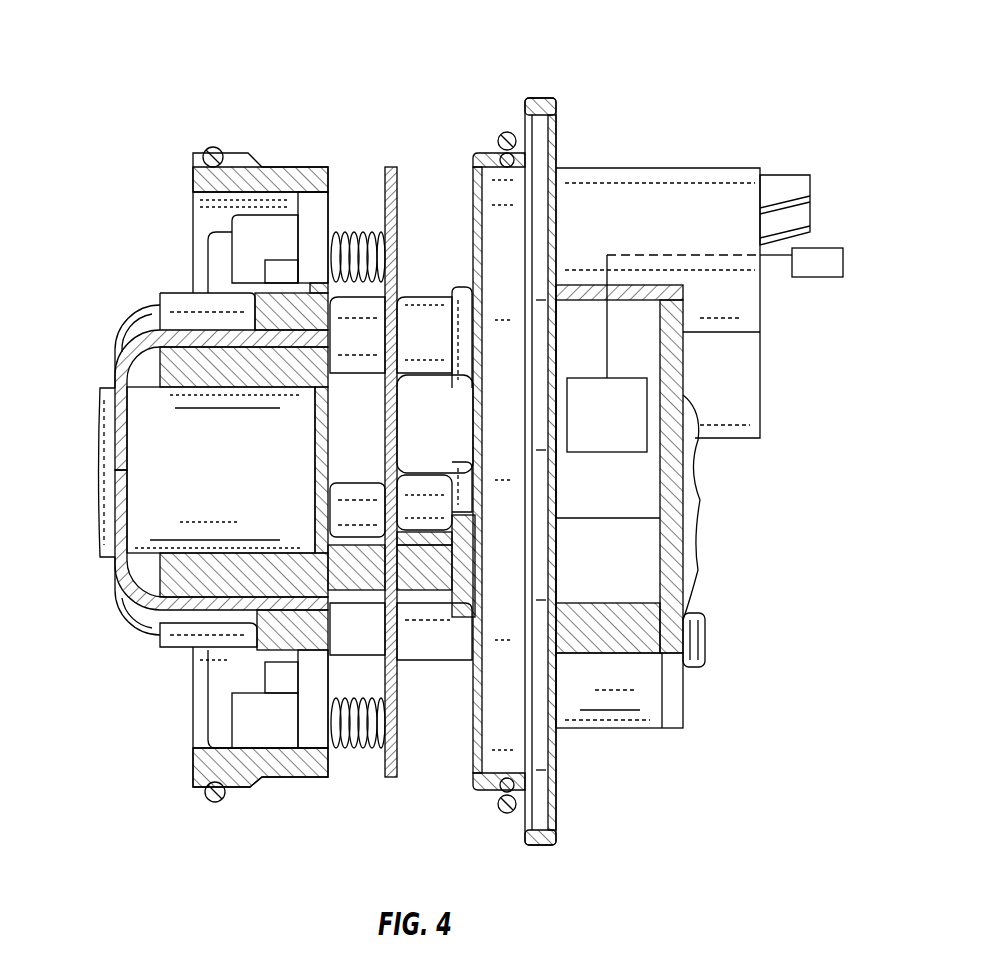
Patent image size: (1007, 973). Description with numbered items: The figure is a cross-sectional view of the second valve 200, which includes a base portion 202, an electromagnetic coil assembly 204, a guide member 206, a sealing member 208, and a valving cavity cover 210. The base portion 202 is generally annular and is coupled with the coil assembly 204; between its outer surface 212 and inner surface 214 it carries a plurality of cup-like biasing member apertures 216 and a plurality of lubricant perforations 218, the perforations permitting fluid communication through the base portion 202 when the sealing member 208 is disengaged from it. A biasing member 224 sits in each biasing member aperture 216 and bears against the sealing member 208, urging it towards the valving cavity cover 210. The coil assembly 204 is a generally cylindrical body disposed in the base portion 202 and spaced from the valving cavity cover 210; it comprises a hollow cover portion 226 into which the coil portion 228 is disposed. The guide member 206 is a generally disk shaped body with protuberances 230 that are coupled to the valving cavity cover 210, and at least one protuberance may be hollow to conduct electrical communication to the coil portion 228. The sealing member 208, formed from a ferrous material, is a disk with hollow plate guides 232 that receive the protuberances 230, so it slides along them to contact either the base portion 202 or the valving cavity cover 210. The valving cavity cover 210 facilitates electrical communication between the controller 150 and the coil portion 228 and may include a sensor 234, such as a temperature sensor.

The controller 150 is at (820, 278).
The second valve 200 is at (720, 88).
The base portion 202 is at (312, 168).
The electromagnetic coil assembly 204 is at (128, 312).
The guide member 206 is at (283, 390).
The sealing member 208 is at (392, 777).
The valving cavity cover 210 is at (673, 737).
The outer surface 212 is at (290, 165).
The inner surface 214 is at (187, 597).
The biasing member apertures 216 is at (330, 217).
The lubricant perforations 218 is at (313, 245).
The biasing member 224 is at (383, 723).
The cover portion 226 is at (137, 615).
The coil portion 228 is at (183, 368).
The protuberances 230 is at (393, 298).
The plate guides 232 is at (427, 495).
The sensor 234 is at (585, 455).